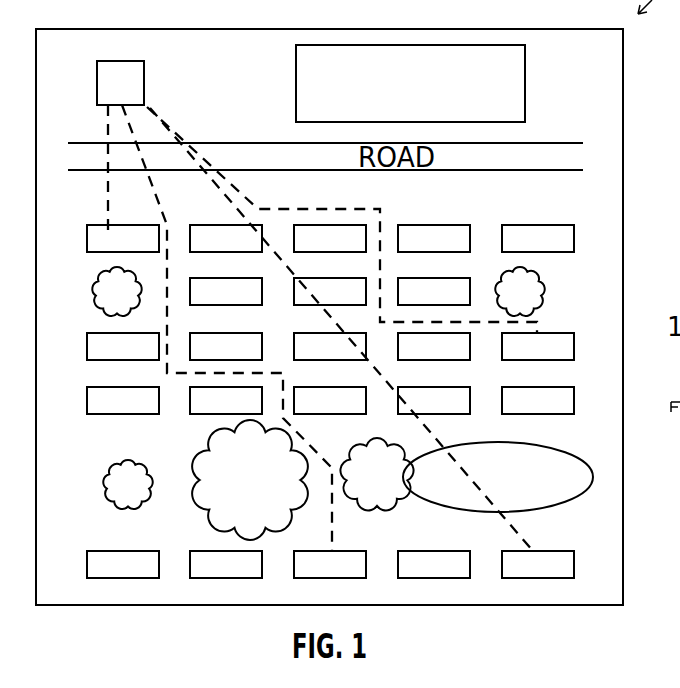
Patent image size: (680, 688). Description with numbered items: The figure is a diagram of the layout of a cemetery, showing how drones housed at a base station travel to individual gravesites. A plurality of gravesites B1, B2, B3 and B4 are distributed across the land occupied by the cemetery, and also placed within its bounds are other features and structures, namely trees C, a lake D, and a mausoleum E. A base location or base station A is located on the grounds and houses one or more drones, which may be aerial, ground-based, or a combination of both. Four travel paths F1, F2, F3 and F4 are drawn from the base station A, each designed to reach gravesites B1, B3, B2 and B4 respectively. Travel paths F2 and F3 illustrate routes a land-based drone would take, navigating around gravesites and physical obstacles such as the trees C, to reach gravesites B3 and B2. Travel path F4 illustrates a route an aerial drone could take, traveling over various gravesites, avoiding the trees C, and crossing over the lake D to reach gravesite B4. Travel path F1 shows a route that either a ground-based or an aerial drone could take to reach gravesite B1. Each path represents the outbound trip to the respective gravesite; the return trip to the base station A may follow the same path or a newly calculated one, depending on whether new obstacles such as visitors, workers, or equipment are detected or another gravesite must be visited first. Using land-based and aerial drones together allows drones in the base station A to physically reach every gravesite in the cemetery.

The base station A is at (120, 83).
The gravesite B1 is at (123, 239).
The gravesite B2 is at (538, 348).
The gravesite B3 is at (330, 565).
The gravesite B4 is at (538, 566).
The trees C is at (318, 403).
The lake D is at (498, 477).
The mausoleum E is at (410, 83).
The travel path F1 is at (108, 190).
The travel path F2 is at (191, 375).
The travel path F3 is at (381, 226).
The travel path F4 is at (322, 313).